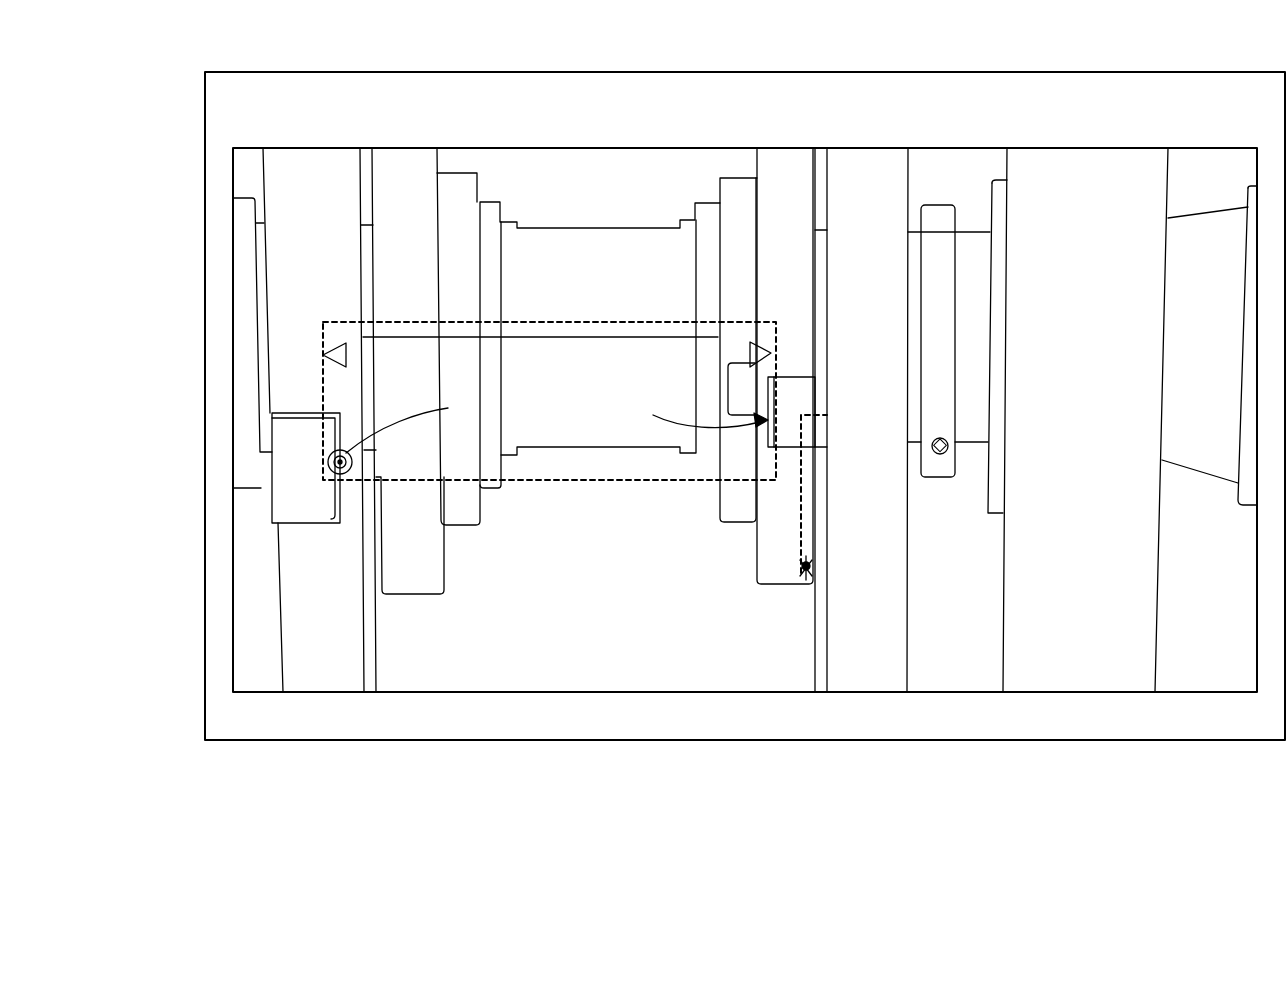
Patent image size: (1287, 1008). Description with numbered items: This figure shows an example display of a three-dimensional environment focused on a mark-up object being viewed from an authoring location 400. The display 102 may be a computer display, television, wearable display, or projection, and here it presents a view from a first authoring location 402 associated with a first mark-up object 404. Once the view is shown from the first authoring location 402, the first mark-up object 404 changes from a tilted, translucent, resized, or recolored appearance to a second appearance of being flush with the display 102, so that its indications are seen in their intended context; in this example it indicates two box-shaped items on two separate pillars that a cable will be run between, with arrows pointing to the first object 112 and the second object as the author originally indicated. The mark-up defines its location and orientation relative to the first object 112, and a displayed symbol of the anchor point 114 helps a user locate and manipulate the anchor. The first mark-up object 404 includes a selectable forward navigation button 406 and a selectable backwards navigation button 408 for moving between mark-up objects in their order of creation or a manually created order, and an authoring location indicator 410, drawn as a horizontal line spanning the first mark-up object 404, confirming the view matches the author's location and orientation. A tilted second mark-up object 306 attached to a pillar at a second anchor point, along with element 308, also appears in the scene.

The display 102 is at (1263, 71).
The example display of a 3D environment focused on a mark-up object being viewed fro 400 is at (807, 841).
The first authoring location 402 is at (614, 147).
The first mark-up object 404 is at (598, 482).
The selectable forward navigation button 406 is at (758, 358).
The selectable backwards navigation button 408 is at (338, 340).
The authoring location indicator 410 is at (618, 334).
The first object 112 is at (323, 481).
The anchor point 114 is at (343, 472).
The tilted second mark-up object 306 is at (812, 472).
The cable termination 308 is at (807, 580).